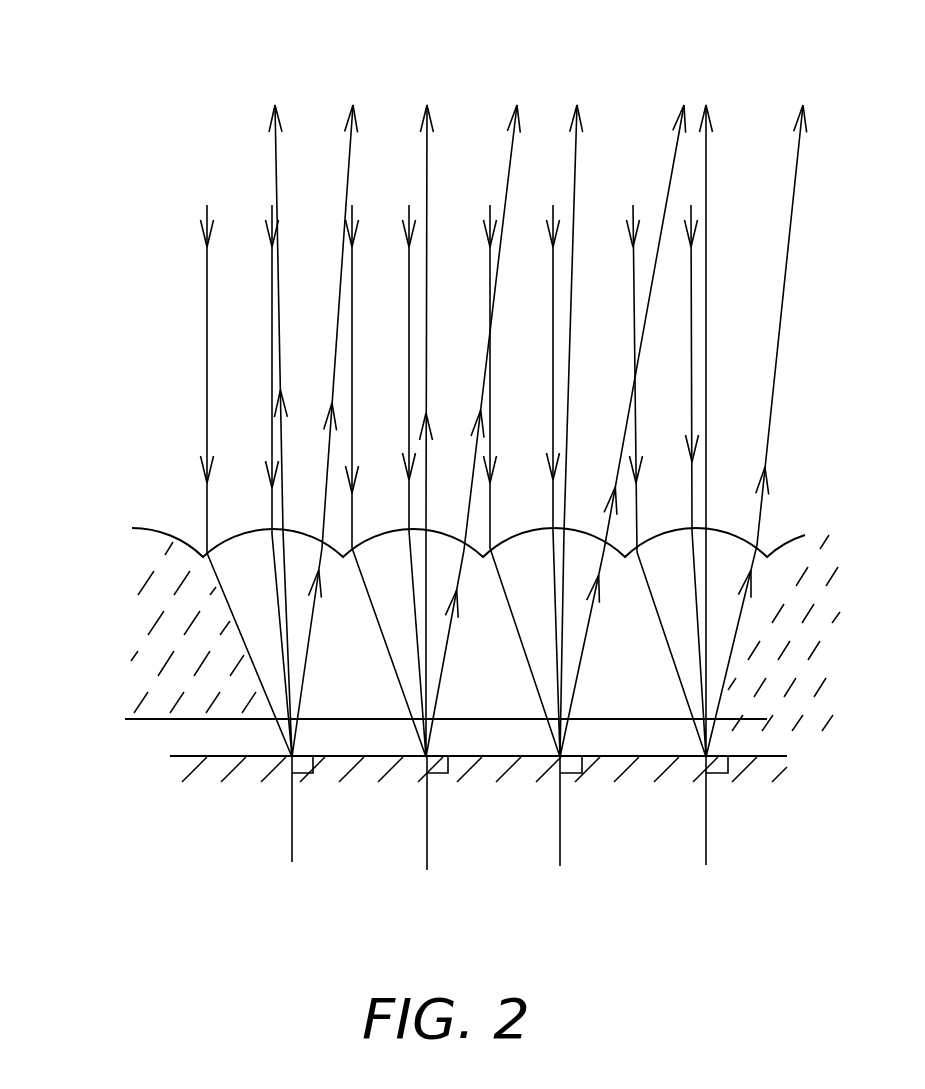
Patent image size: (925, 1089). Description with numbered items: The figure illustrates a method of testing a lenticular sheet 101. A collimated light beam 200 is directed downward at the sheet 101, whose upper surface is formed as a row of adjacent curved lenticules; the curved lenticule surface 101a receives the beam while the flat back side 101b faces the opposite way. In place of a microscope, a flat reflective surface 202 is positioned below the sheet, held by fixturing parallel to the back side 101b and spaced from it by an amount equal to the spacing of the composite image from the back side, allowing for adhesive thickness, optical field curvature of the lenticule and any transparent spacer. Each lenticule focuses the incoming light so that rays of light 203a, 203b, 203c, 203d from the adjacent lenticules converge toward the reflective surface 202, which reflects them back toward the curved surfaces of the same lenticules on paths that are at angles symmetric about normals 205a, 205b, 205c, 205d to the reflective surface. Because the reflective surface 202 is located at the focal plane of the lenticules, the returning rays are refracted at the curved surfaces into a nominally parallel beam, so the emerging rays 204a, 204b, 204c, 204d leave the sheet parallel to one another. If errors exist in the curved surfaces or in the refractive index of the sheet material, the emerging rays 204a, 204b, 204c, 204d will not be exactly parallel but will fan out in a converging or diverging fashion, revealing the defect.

The collimated light beam 200 is at (245, 319).
The microlens surface of substrate 101a is at (163, 553).
The lenticular sheet 101 is at (142, 639).
The back side 101b is at (138, 720).
The flat reflective surface 202 is at (220, 768).
The rays of light 203a is at (327, 650).
The rays of light 203b is at (466, 649).
The rays of light 203c is at (606, 649).
The rays of light 203d is at (793, 670).
The emerging rays 204a is at (354, 84).
The emerging rays 204b is at (507, 90).
The emerging rays 204c is at (657, 140).
The emerging rays 204d is at (793, 86).
The normal 205a is at (292, 827).
The normal 205b is at (427, 827).
The normal 205c is at (560, 828).
The normal 205d is at (707, 830).